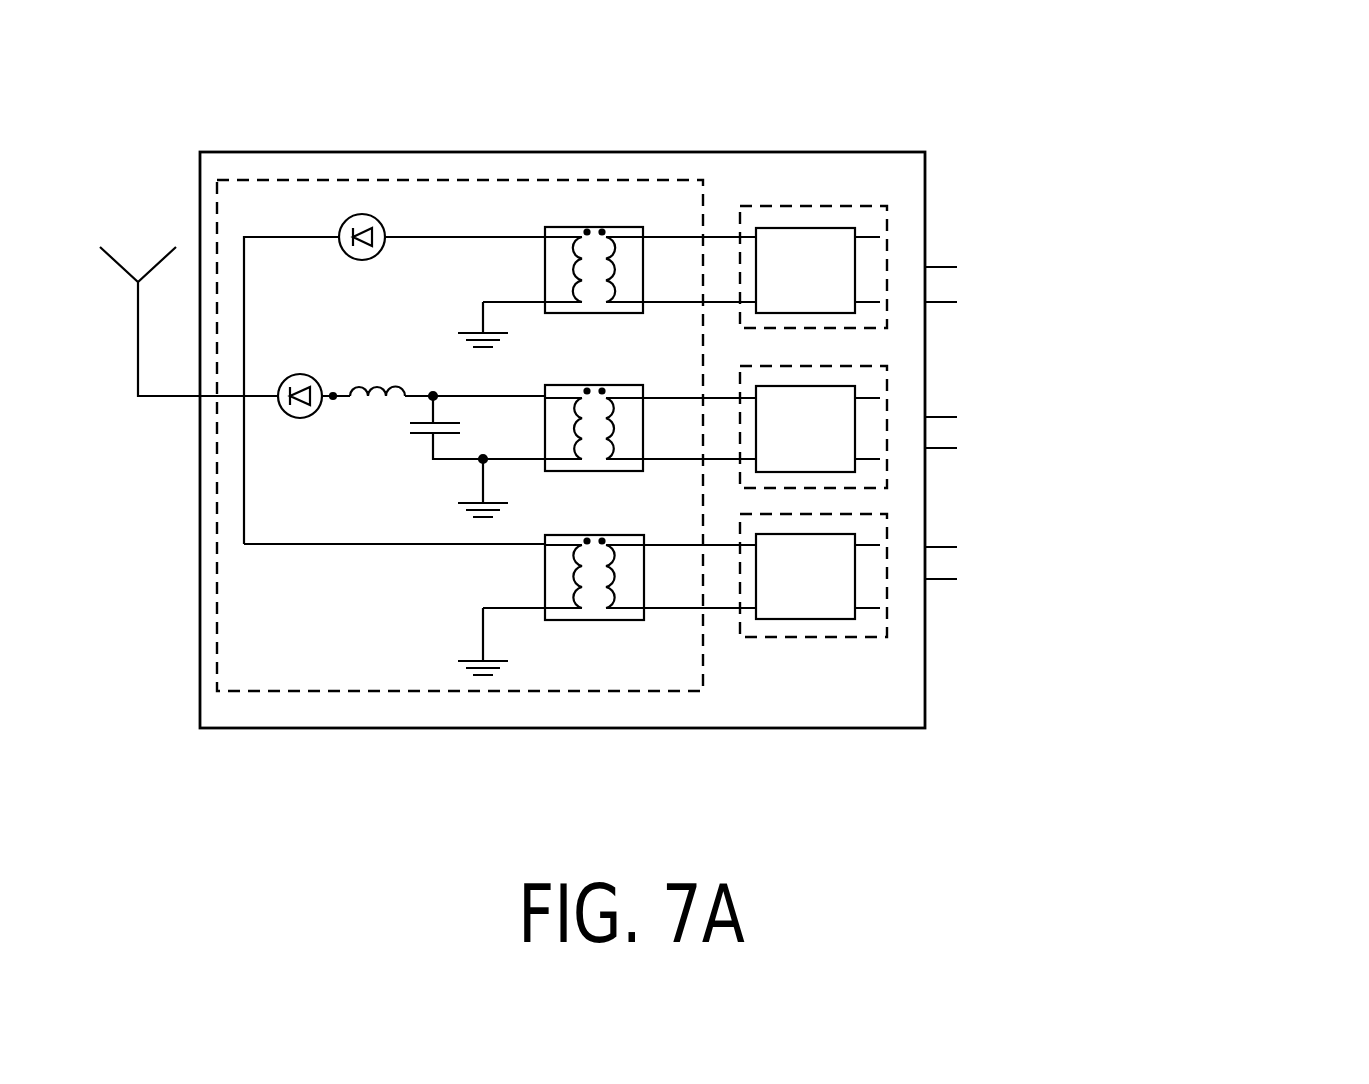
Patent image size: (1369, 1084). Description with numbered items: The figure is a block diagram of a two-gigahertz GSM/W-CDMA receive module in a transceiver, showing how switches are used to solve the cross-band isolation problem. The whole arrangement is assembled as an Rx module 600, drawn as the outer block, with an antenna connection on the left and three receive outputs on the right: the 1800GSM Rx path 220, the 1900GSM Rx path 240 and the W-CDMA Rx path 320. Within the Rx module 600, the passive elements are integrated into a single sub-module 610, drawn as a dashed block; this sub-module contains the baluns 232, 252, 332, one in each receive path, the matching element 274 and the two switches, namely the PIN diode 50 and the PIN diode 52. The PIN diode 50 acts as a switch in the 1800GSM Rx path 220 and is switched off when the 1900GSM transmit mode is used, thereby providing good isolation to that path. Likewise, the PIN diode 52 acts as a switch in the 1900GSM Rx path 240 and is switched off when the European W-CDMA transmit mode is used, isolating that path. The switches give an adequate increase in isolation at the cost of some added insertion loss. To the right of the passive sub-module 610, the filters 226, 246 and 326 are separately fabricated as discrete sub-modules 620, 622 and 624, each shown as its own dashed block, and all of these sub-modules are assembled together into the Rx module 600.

The Rx module 600 is at (532, 152).
The sub-module 610 is at (242, 597).
The PIN diode 50 is at (363, 214).
The PIN diode 52 is at (302, 374).
The matching element 274 is at (395, 413).
The balun 232 is at (582, 225).
The balun 252 is at (568, 383).
The balun 332 is at (568, 535).
The sub-module 620 is at (800, 206).
The sub-module 622 is at (860, 366).
The sub-module 624 is at (873, 625).
The filter 226 is at (837, 237).
The filter 246 is at (837, 398).
The filter 326 is at (837, 544).
The 1800GSM Rx path 220 is at (1015, 279).
The 1900GSM Rx path 240 is at (1022, 440).
The W-CDMA Rx path 320 is at (1027, 571).